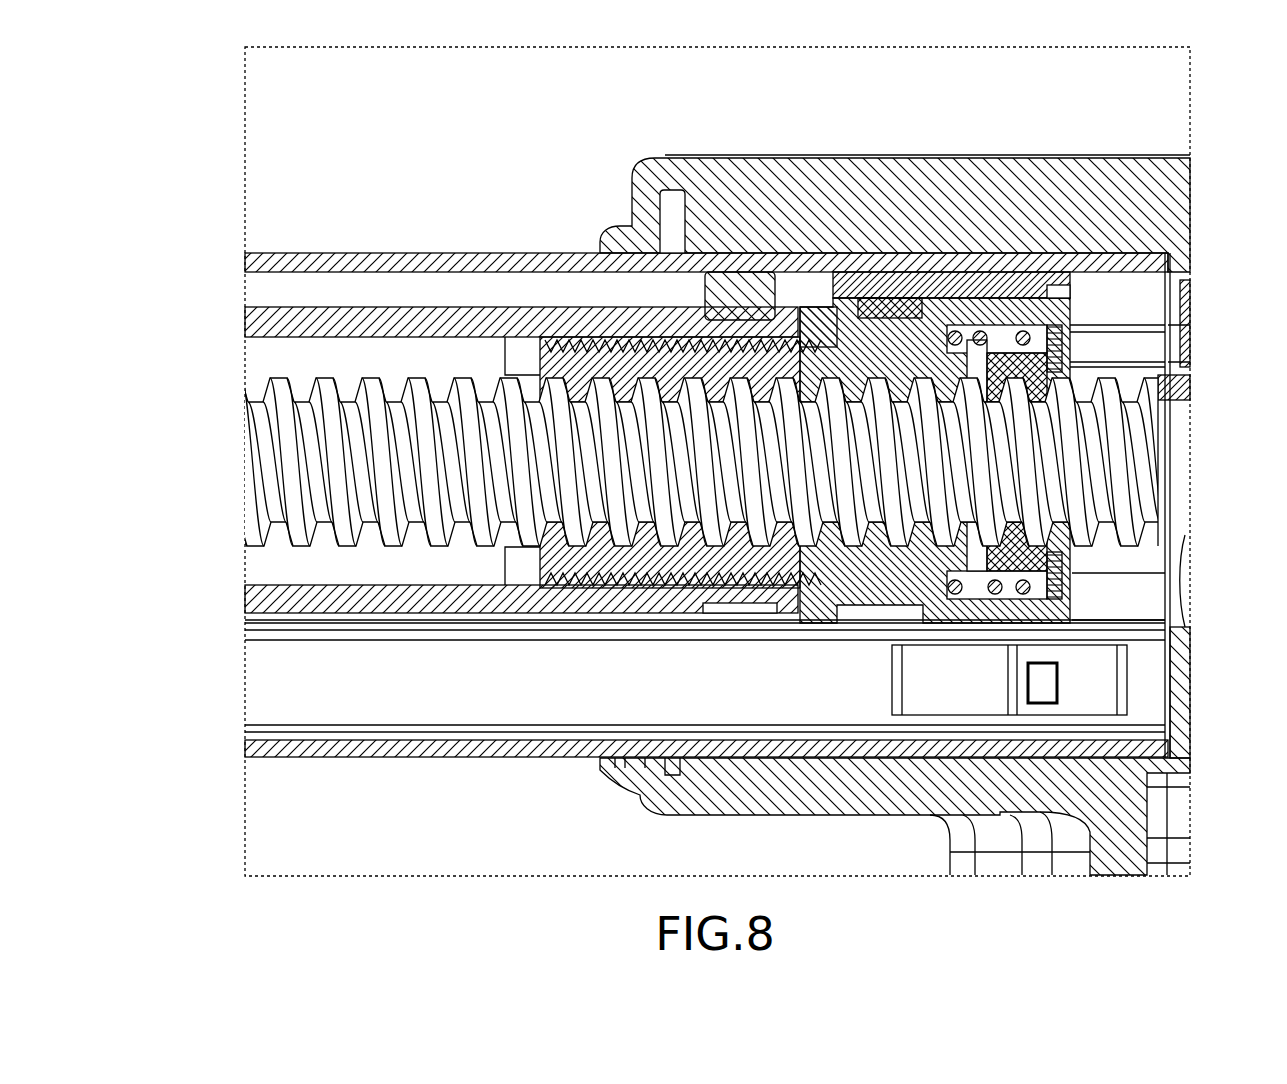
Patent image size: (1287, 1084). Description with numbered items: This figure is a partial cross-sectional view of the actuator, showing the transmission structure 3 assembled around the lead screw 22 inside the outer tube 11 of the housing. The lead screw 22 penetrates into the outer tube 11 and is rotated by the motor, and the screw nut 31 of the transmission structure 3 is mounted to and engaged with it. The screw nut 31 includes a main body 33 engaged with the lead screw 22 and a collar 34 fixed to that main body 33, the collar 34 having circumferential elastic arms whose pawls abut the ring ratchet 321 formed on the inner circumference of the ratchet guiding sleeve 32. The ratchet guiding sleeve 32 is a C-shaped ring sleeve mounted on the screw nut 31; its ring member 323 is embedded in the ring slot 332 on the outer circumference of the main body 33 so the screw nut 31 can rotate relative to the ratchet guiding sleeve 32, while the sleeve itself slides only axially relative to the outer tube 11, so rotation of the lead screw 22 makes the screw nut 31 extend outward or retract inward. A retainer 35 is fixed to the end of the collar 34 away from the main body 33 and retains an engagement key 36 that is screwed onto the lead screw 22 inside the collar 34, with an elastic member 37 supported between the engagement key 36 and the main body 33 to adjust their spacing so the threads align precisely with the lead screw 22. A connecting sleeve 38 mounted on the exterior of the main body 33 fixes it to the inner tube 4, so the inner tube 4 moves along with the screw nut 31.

The transmission structure 3 is at (1083, 588).
The inner tube 4 is at (405, 320).
The outer tube 11 is at (337, 262).
The lead screw 22 is at (288, 466).
The screw nut 31 is at (596, 590).
The ratchet guiding sleeve 32 is at (1025, 388).
The main body 33 is at (624, 347).
The collar 34 is at (1013, 312).
The retainer 35 is at (1062, 348).
The engagement key 36 is at (1043, 583).
The elastic member 37 is at (1003, 593).
The connecting sleeve 38 is at (577, 338).
The ring ratchet 321 is at (1060, 288).
The ring member 323 is at (893, 318).
The ring slot 332 is at (843, 290).